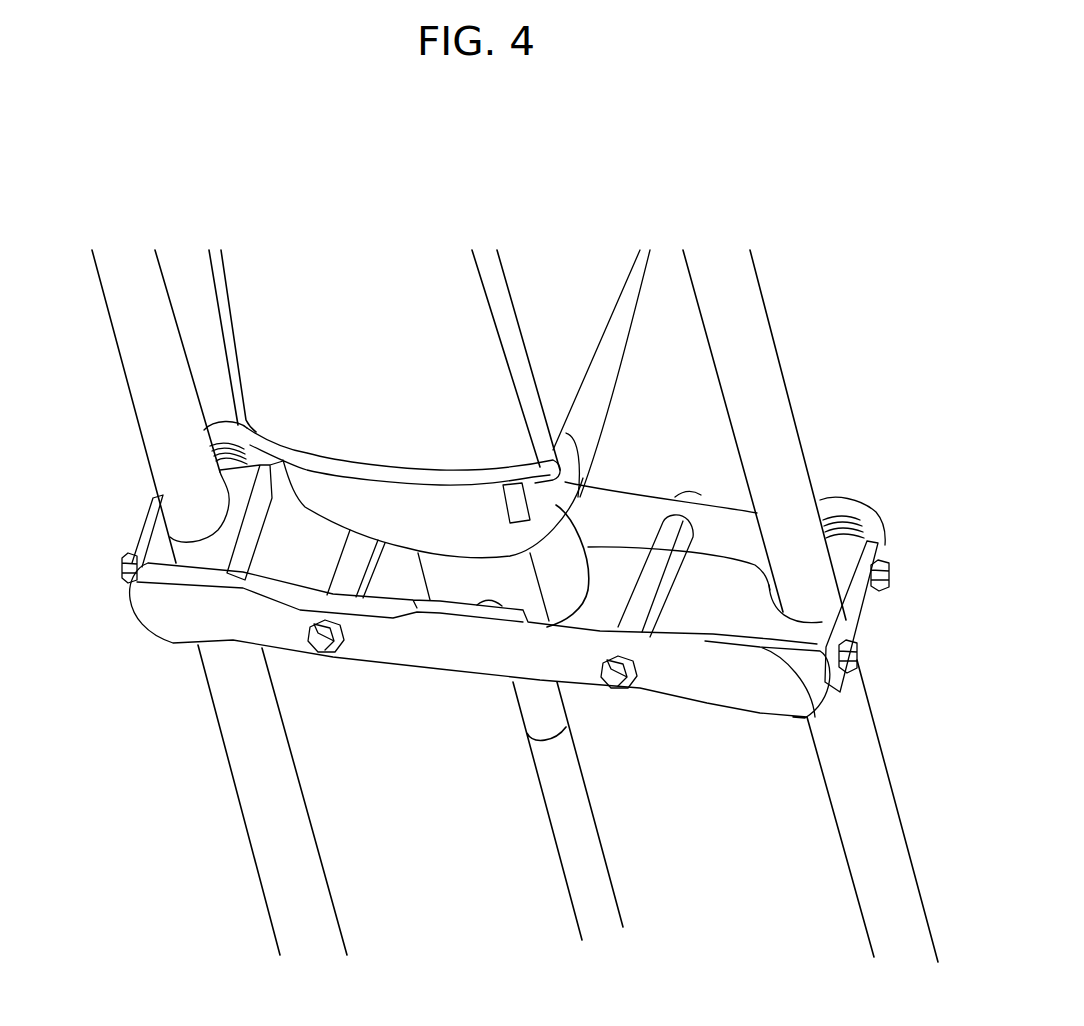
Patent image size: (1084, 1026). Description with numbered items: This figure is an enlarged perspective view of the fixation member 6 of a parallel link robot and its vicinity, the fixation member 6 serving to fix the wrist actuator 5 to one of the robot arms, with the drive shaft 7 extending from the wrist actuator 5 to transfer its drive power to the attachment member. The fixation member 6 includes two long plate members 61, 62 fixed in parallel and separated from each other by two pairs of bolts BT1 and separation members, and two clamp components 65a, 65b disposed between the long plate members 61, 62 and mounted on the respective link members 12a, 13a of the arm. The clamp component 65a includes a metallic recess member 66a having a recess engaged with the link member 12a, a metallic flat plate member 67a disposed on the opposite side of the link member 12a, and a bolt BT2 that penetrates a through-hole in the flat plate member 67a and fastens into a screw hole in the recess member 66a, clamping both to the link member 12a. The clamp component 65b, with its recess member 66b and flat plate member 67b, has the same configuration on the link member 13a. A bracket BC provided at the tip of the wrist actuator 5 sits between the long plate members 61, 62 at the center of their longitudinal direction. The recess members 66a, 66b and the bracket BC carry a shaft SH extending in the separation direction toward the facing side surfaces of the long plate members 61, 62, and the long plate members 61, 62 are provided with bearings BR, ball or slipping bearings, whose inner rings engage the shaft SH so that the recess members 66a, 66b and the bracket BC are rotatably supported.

The wrist actuator 5 is at (388, 298).
The fixation member 6 is at (830, 446).
The drive shaft 7 is at (600, 888).
The link member 12a is at (748, 322).
The link member 13a is at (146, 351).
The long plate member 61 is at (745, 690).
The long plate member 62 is at (630, 487).
The clamp component 65a is at (888, 520).
The clamp component 65b is at (139, 500).
The recess member 66a is at (783, 623).
The recess member 66b is at (153, 553).
The flat plate member 67a is at (858, 614).
The flat plate member 67b is at (127, 522).
The bearing BR is at (226, 456).
The bolt BT1 is at (323, 652).
The bolt BT2 is at (126, 585).
The bracket BC is at (453, 587).
The shaft SH is at (480, 605).